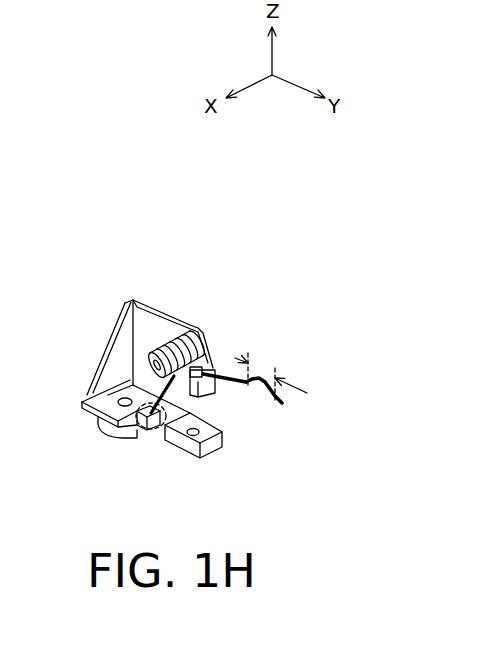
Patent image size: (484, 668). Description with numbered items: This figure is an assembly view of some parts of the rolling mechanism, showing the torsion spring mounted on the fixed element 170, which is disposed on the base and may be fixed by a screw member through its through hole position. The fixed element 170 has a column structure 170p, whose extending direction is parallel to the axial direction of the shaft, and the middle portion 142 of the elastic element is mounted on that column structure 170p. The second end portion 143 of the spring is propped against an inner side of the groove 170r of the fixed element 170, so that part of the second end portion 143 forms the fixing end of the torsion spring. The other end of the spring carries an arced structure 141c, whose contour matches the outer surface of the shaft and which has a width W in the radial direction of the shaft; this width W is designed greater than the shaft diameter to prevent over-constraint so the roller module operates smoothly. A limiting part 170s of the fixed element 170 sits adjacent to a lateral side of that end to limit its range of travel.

The fixed element 170 is at (183, 382).
The column structure 170p is at (147, 362).
The groove 170r is at (153, 434).
The limiting part 170s is at (200, 399).
The middle portion 142 is at (257, 370).
The arced structure 141c is at (257, 389).
The second end portion 143 is at (184, 428).
The width W is at (271, 369).